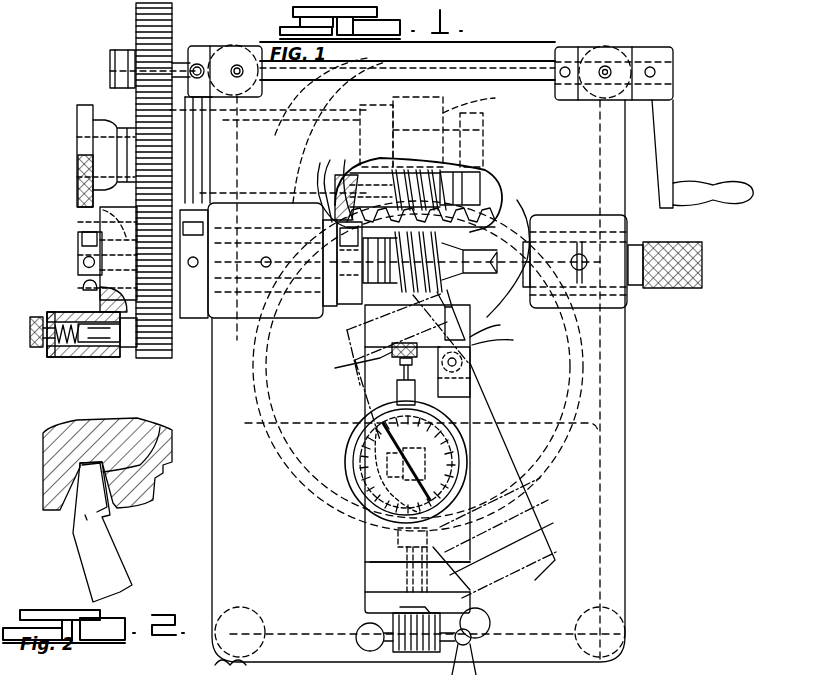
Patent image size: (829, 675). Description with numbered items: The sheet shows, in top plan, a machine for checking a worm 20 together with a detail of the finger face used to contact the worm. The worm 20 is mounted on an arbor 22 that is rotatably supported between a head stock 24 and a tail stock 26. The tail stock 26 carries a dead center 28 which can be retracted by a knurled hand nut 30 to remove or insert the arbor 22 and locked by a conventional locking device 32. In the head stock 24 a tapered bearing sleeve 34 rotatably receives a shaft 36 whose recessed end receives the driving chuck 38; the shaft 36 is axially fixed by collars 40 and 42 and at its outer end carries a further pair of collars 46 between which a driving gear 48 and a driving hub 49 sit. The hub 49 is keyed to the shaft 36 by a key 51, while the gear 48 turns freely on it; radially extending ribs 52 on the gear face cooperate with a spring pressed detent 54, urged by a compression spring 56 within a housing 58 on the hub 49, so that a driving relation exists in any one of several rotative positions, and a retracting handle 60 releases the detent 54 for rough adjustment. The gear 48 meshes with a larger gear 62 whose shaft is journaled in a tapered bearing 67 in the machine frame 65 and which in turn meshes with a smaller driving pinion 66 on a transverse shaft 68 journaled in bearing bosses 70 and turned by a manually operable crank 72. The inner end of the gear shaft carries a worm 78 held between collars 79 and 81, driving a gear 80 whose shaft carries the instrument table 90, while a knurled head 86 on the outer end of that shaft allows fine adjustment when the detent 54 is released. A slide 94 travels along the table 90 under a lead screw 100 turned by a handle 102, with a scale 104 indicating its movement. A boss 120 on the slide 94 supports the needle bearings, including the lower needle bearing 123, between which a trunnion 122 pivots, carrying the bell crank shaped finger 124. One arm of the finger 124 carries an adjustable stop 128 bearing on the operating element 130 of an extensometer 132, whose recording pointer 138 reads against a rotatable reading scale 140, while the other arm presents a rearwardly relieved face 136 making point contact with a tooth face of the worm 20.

In FIG. 1, the worm 20 is at (488, 200).
In FIG. 2, the worm 20 is at (140, 485).
In FIG. 1, the arbor 22 is at (478, 240).
In FIG. 1, the head stock 24 is at (268, 203).
In FIG. 1, the tail stock 26 is at (548, 218).
In FIG. 1, the dead center 28 is at (497, 326).
In FIG. 1, the knurled hand nut 30 is at (665, 288).
In FIG. 1, the locking device 32 is at (580, 255).
In FIG. 1, the tapered bearing sleeve 34 is at (318, 160).
In FIG. 1, the shaft 36 is at (100, 212).
In FIG. 1, the driving chuck 38 is at (380, 290).
In FIG. 1, the collar 40 is at (352, 168).
In FIG. 1, the collar 42 is at (196, 222).
In FIG. 1, the collars 46 is at (186, 205).
In FIG. 1, the driving gear 48 is at (148, 358).
In FIG. 1, the driving hub 49 is at (100, 220).
In FIG. 1, the key 51 is at (78, 240).
In FIG. 1, the ribs 52 is at (223, 667).
In FIG. 1, the spring pressed detent 54 is at (100, 342).
In FIG. 1, the compression spring 56 is at (60, 357).
In FIG. 1, the housing 58 is at (66, 310).
In FIG. 1, the retracting handle 60 is at (36, 347).
In FIG. 1, the larger gear 62 is at (150, 118).
In FIG. 1, the machine frame 65 is at (252, 40).
In FIG. 1, the driving pinion 66 is at (142, 22).
In FIG. 1, the tapered bearing 67 is at (305, 100).
In FIG. 1, the shaft 68 is at (182, 62).
In FIG. 1, the bearing bosses 70 is at (208, 50).
In FIG. 1, the crank 72 is at (672, 118).
In FIG. 1, the worm 78 is at (440, 200).
In FIG. 1, the collar 79 is at (437, 127).
In FIG. 1, the gear 80 is at (575, 398).
In FIG. 1, the collar 81 is at (405, 75).
In FIG. 1, the knurled head 86 is at (77, 118).
In FIG. 1, the instrument table 90 is at (504, 341).
In FIG. 1, the slide 94 is at (365, 395).
In FIG. 1, the lead screw 100 is at (365, 573).
In FIG. 1, the handle 102 is at (355, 634).
In FIG. 1, the scale 104 is at (400, 607).
In FIG. 1, the boss 120 is at (470, 368).
In FIG. 1, the trunnion 122 is at (417, 350).
In FIG. 1, the lower needle bearing 123 is at (450, 641).
In FIG. 1, the finger 124 is at (408, 366).
In FIG. 2, the finger 124 is at (110, 555).
In FIG. 1, the stop 128 is at (344, 366).
In FIG. 1, the operating element 130 is at (415, 385).
In FIG. 1, the extensometer 132 is at (445, 440).
In FIG. 1, the relieved face 136 is at (455, 300).
In FIG. 2, the relieved face 136 is at (153, 428).
In FIG. 1, the recording pointer 138 is at (455, 415).
In FIG. 1, the reading scale 140 is at (455, 470).